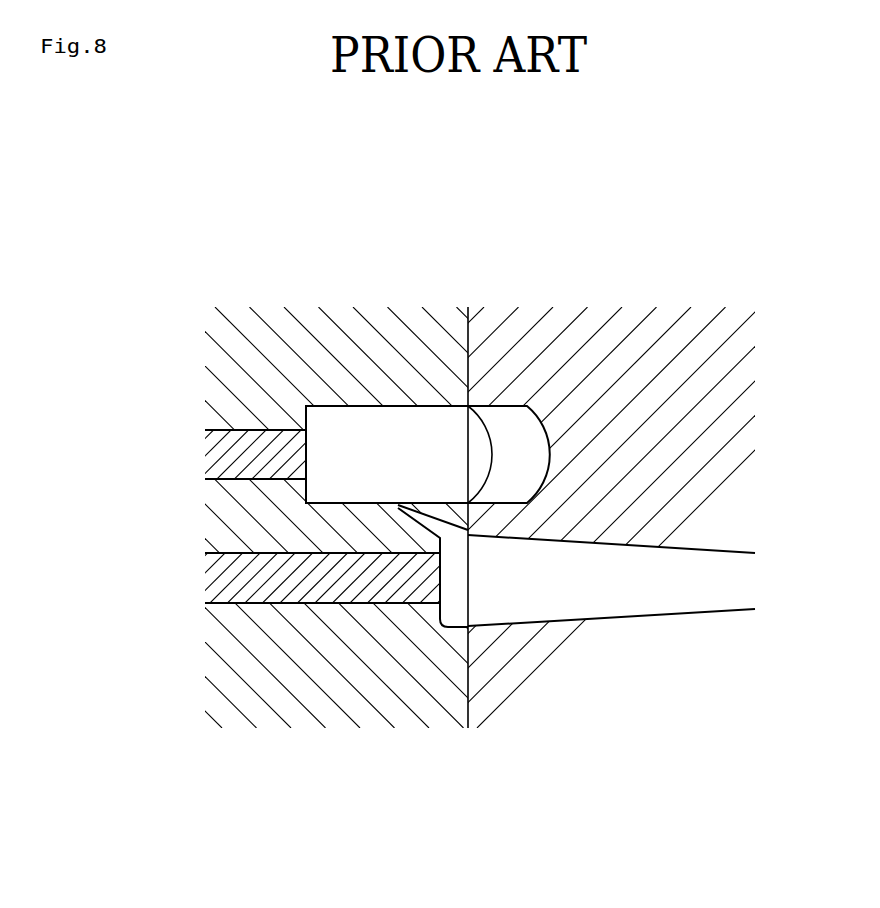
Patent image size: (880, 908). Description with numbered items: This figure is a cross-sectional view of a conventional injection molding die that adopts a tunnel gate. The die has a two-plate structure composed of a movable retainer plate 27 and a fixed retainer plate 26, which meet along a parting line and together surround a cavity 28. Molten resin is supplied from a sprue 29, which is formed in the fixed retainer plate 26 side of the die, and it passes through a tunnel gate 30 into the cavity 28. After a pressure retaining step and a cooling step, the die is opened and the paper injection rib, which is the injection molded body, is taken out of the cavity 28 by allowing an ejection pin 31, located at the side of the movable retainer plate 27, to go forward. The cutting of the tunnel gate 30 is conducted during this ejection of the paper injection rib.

The fixed retainer plate 26 is at (628, 345).
The movable retainer plate 27 is at (275, 345).
The cavity 28 is at (387, 432).
The sprue 29 is at (590, 598).
The tunnel gate 30 is at (418, 517).
The ejection pin 31 is at (222, 450).